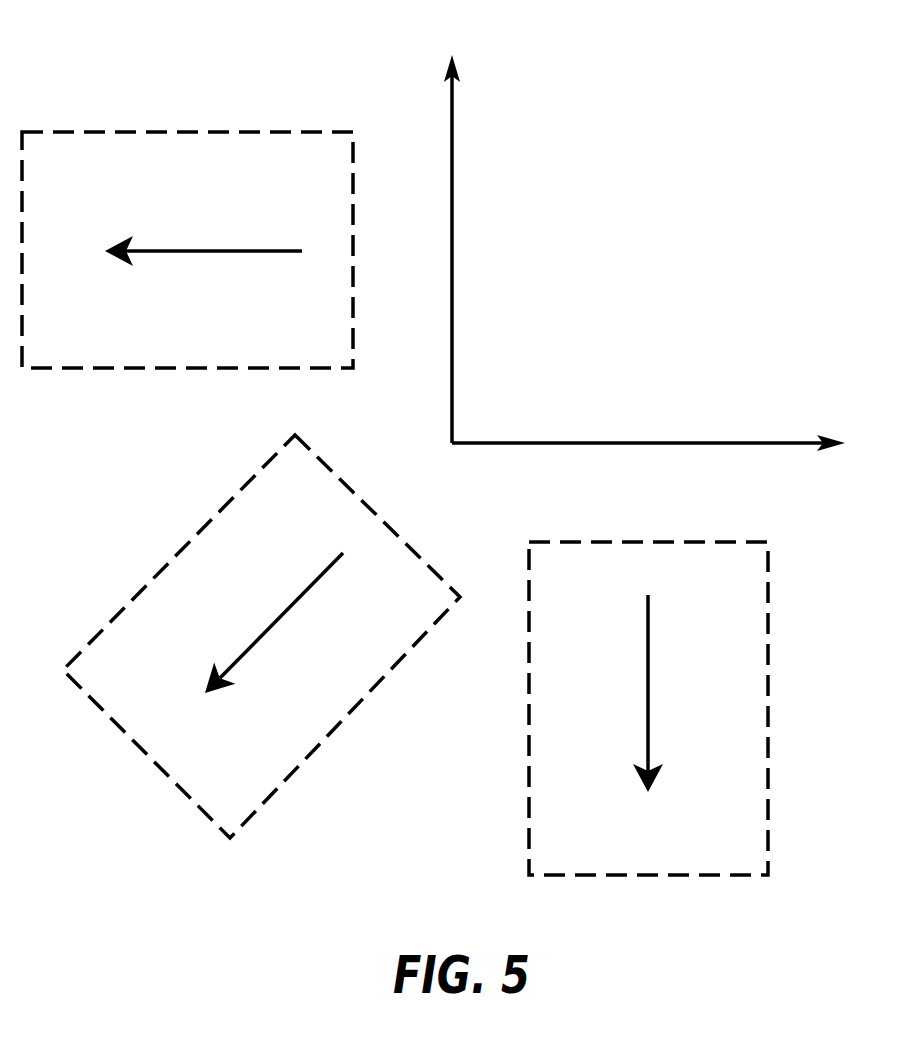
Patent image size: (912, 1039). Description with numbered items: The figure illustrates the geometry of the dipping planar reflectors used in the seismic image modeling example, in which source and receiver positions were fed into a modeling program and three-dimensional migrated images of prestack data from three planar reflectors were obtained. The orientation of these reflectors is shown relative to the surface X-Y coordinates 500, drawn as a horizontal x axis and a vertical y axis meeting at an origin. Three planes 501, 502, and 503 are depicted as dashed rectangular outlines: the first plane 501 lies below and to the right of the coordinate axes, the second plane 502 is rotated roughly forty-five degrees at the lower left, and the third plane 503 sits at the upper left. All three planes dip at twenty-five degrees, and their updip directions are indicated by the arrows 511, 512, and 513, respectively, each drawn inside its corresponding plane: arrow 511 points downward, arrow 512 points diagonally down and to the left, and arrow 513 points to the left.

The surface X-Y coordinates 500 is at (452, 420).
The planar reflector 501 is at (529, 817).
The planar reflector 502 is at (125, 607).
The planar reflector 503 is at (115, 132).
The updip direction arrow 511 is at (648, 693).
The updip direction arrow 512 is at (293, 606).
The updip direction arrow 513 is at (203, 249).